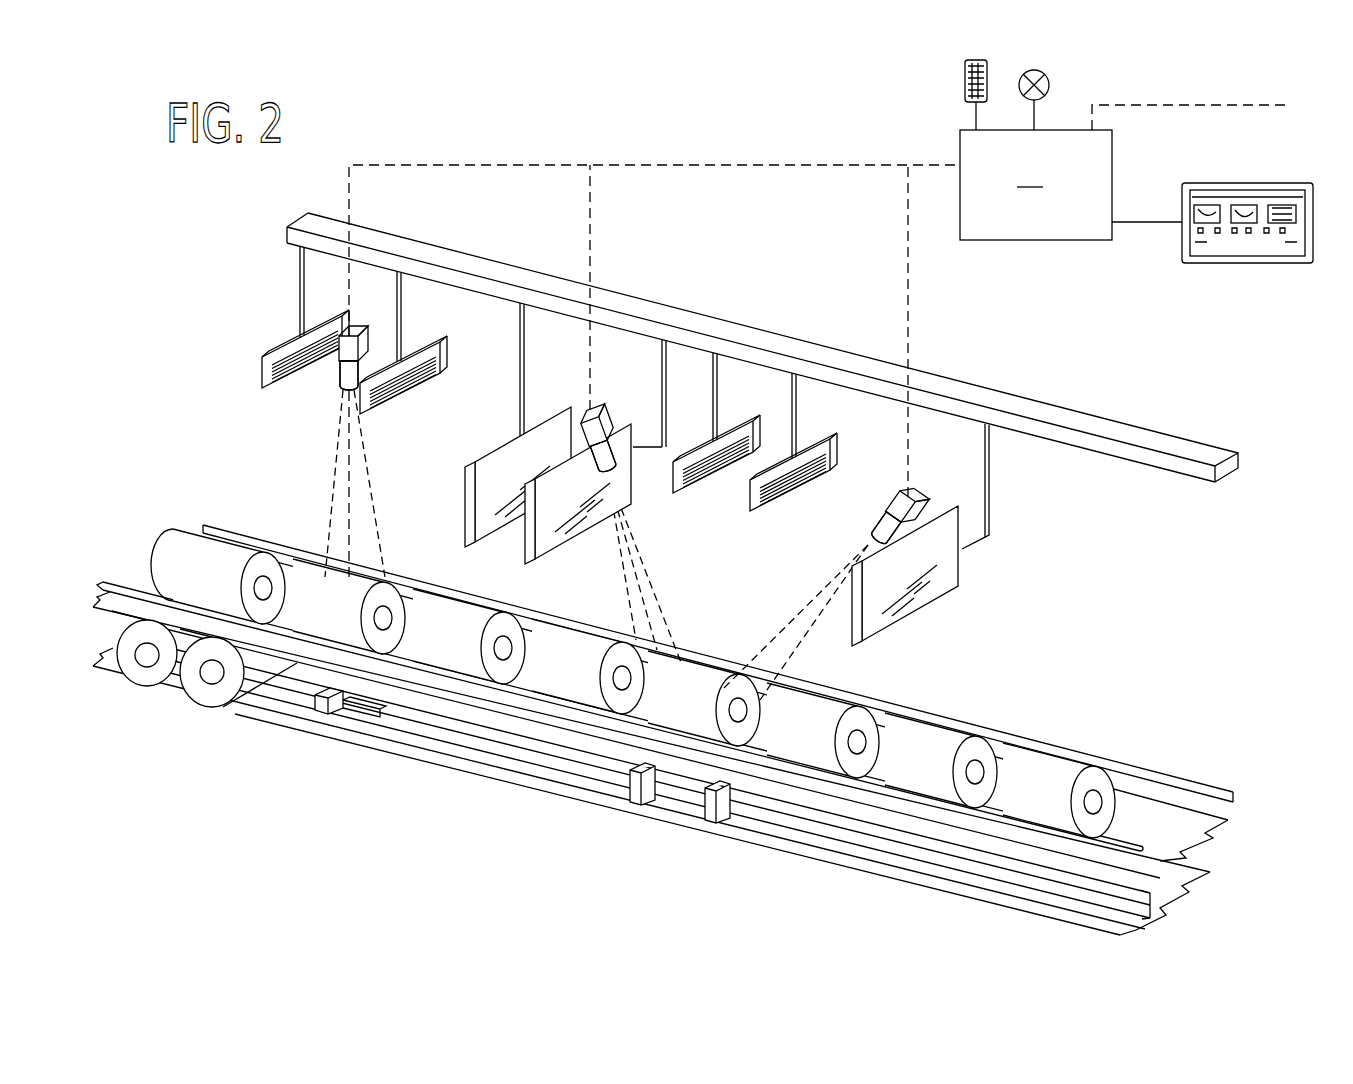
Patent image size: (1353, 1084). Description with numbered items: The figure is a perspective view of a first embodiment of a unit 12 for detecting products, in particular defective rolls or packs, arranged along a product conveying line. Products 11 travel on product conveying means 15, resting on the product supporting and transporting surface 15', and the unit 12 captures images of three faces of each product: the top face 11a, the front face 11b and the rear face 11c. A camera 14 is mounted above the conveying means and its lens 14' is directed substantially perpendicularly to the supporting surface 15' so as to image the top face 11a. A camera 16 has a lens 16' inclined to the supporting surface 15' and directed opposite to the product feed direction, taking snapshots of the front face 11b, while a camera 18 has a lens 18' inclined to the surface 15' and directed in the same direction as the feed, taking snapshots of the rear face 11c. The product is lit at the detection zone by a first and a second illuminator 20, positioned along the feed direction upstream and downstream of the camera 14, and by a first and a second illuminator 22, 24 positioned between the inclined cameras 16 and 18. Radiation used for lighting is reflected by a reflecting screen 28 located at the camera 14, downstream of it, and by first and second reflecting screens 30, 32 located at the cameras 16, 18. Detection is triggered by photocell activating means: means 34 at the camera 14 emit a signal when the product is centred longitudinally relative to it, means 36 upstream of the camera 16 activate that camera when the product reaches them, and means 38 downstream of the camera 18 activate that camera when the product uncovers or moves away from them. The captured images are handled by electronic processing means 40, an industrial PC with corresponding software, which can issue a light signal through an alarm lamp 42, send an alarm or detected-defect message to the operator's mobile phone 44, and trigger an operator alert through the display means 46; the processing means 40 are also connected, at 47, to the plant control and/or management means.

The product 11 is at (200, 555).
The top face 11a is at (358, 565).
The front face 11b is at (1135, 782).
The rear face 11c is at (985, 750).
The unit for detecting products 12 is at (263, 791).
The camera 14 is at (292, 333).
The lens 14' is at (282, 401).
The product conveying means 15 is at (340, 743).
The product supporting and transporting surface 15' is at (257, 710).
The camera 16 is at (926, 438).
The lens 16' is at (873, 422).
The camera 18 is at (603, 351).
The lens 18' is at (638, 362).
The illuminator 20 is at (275, 355).
The illuminator 22 is at (730, 458).
The illuminator 24 is at (815, 478).
The reflecting screen 28 is at (490, 443).
The reflecting screen 30 is at (556, 470).
The reflecting screen 32 is at (945, 580).
The activating means 34 is at (327, 707).
The activating means 36 is at (710, 820).
The activating means 38 is at (640, 810).
The electronic processing means 40 is at (1036, 185).
The alarm lamp 42 is at (1050, 86).
The mobile phone 44 is at (960, 85).
The display means 46 is at (1247, 264).
The connection 47 is at (1175, 105).